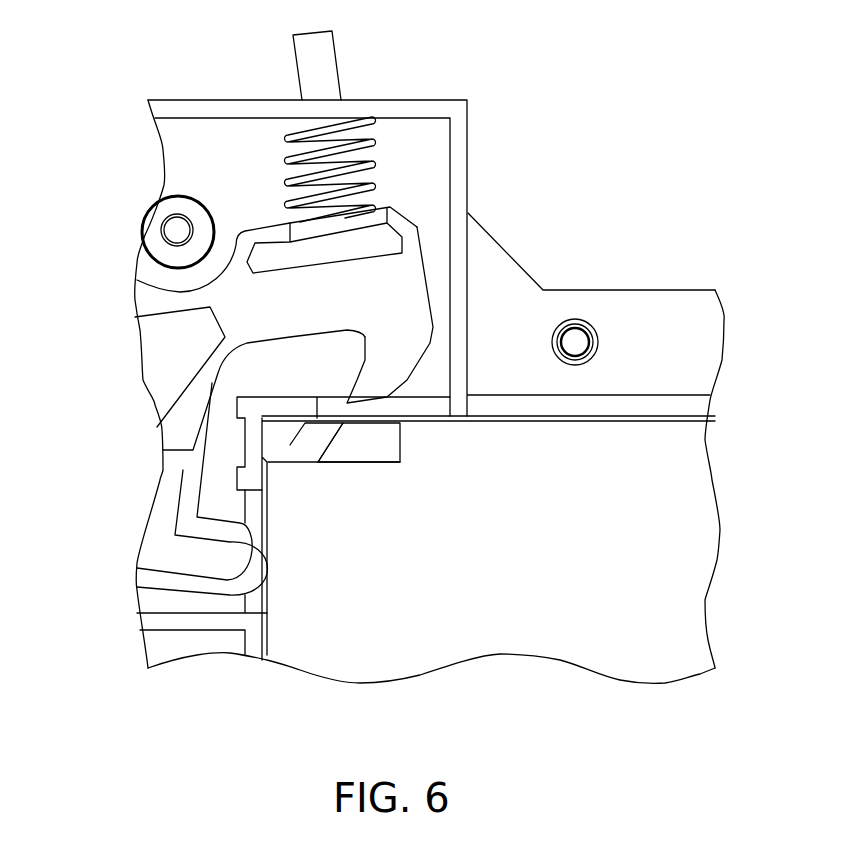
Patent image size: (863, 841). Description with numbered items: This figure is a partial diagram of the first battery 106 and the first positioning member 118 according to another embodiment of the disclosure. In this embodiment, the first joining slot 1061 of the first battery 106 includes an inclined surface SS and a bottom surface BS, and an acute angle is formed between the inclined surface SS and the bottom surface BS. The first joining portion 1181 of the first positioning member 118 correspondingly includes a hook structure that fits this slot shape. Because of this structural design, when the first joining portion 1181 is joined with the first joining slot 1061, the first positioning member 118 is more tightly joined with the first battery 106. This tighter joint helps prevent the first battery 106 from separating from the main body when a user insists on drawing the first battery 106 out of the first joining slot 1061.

The first positioning member 118 is at (253, 218).
The first joining portion 1181 is at (387, 375).
The first battery 106 is at (683, 480).
The first joining slot 1061 is at (378, 443).
The inclined surface SS is at (290, 445).
The bottom surface BS is at (360, 463).